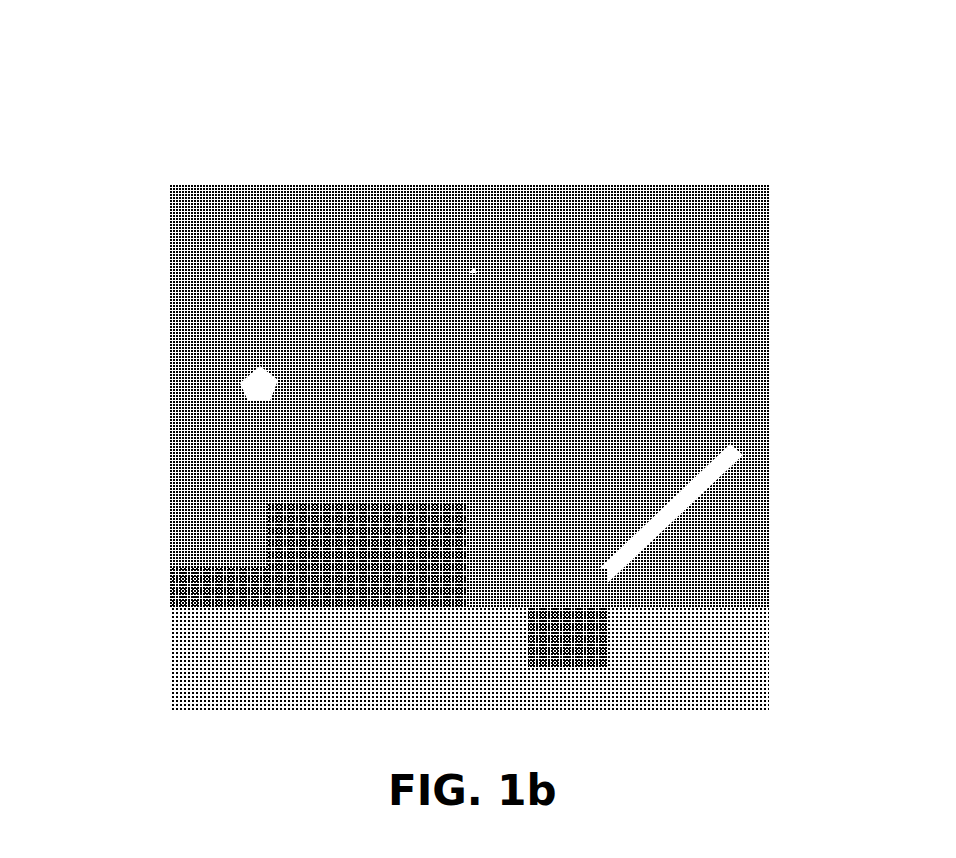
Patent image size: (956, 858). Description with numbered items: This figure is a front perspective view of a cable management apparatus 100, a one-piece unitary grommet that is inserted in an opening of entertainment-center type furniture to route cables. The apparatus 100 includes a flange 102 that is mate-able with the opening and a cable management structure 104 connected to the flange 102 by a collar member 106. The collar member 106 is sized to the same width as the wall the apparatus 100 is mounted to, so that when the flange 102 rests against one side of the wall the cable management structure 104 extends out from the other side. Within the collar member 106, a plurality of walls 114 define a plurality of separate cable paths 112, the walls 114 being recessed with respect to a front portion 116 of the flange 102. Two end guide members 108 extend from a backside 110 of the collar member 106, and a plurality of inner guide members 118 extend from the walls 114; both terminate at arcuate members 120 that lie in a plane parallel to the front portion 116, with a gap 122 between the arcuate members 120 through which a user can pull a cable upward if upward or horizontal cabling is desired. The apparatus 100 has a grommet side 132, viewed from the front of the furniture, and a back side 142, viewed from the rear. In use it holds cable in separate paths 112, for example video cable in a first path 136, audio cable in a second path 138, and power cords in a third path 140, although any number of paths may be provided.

The cable management apparatus 100 is at (684, 158).
The flange 102 is at (583, 645).
The cable management structure 104 is at (702, 532).
The collar member 106 is at (315, 307).
The end guide members 108 is at (347, 250).
The backside 110 is at (605, 445).
The separate cable paths 112 is at (268, 511).
The walls 114 is at (360, 440).
The front portion 116 is at (200, 352).
The inner guide members 118 is at (497, 293).
The arcuate members 120 is at (390, 222).
The gap 122 is at (464, 268).
The grommet side 132 is at (152, 730).
The first path 136 is at (306, 418).
The second path 138 is at (424, 496).
The third path 140 is at (524, 576).
The back side 142 is at (721, 168).